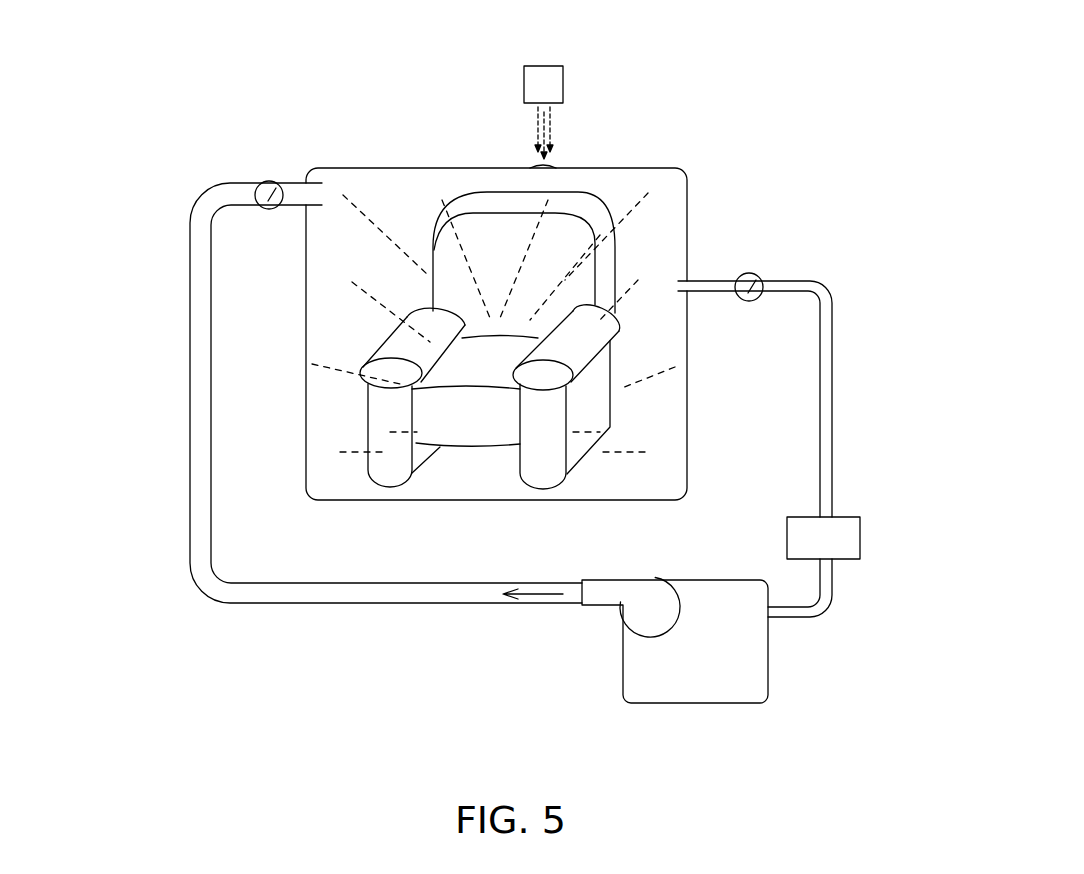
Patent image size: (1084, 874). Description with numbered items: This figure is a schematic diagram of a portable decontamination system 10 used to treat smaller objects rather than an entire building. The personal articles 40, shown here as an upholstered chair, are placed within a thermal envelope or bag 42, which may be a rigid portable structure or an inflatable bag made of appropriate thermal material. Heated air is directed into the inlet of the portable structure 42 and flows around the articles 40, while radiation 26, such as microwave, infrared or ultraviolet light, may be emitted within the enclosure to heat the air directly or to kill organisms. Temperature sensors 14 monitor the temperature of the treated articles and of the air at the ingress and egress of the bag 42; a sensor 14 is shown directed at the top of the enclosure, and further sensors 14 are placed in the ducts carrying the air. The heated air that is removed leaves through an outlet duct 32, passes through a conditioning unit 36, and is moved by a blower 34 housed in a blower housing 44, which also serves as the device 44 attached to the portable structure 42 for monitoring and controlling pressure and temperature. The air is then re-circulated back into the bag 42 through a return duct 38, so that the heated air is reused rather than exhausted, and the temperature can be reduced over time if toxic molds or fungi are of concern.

The seating treatment system 10 is at (663, 96).
The temperature sensor 14 is at (235, 156).
The radiation 26 is at (333, 373).
The outlet duct 32 is at (833, 304).
The blower 34 is at (637, 613).
The conditioning unit 36 is at (808, 551).
The return duct 38 is at (190, 570).
The personal articles 40 is at (492, 192).
The thermal envelope or bag 42 is at (697, 200).
The device 44 is at (769, 675).